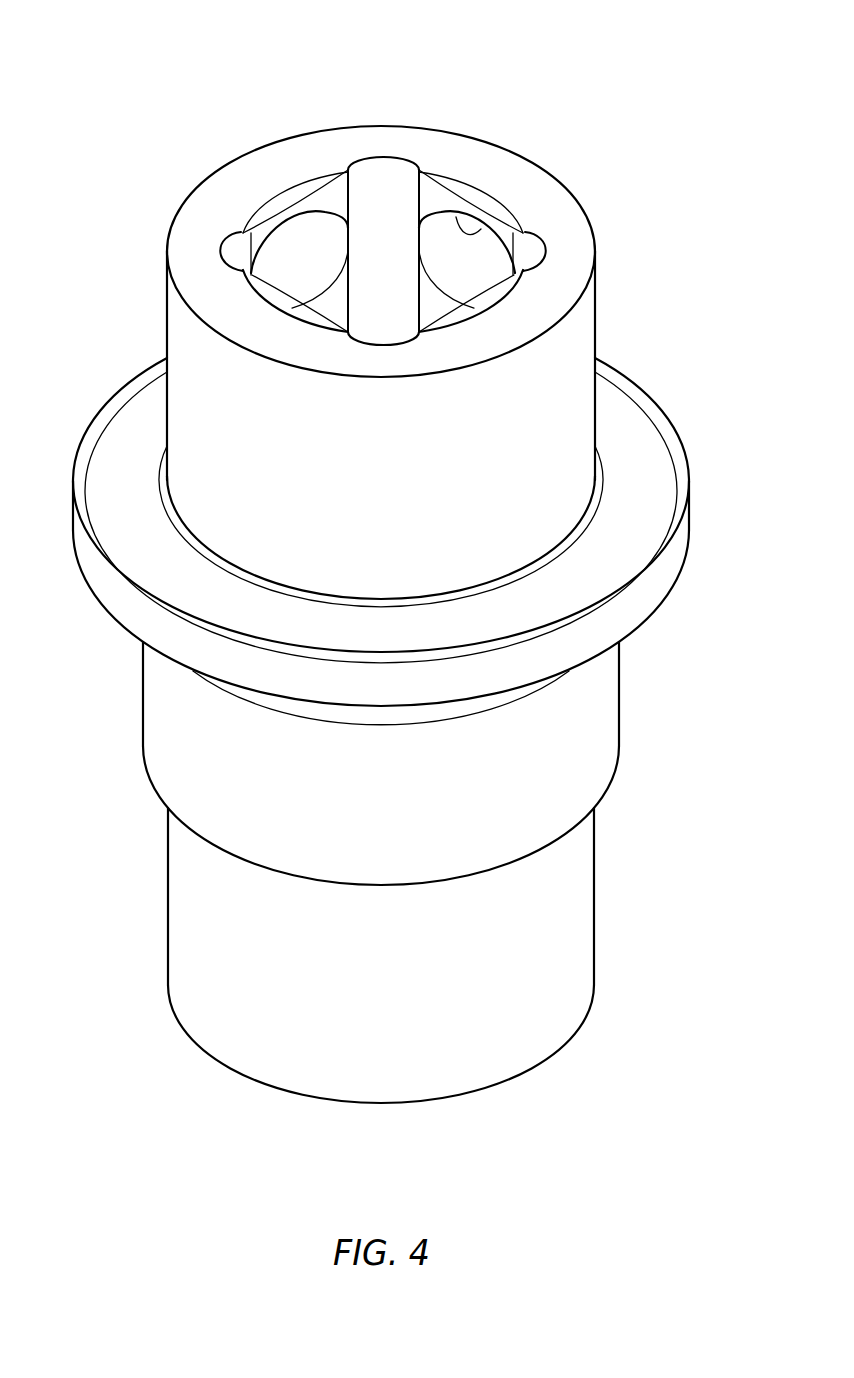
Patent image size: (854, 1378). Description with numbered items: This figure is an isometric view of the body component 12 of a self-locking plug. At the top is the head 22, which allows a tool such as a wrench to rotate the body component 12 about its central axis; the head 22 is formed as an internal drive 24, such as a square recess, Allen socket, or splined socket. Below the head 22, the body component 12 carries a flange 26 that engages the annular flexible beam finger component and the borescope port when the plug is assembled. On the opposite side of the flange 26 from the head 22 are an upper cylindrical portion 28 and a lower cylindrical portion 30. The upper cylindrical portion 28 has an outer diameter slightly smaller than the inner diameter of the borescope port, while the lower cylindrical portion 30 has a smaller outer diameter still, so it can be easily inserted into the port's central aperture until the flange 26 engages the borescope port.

The body component 12 is at (104, 69).
The head 22 is at (167, 320).
The internal drive 24 is at (477, 228).
The flange 26 is at (641, 450).
The upper cylindrical portion 28 is at (142, 689).
The lower cylindrical portion 30 is at (167, 893).